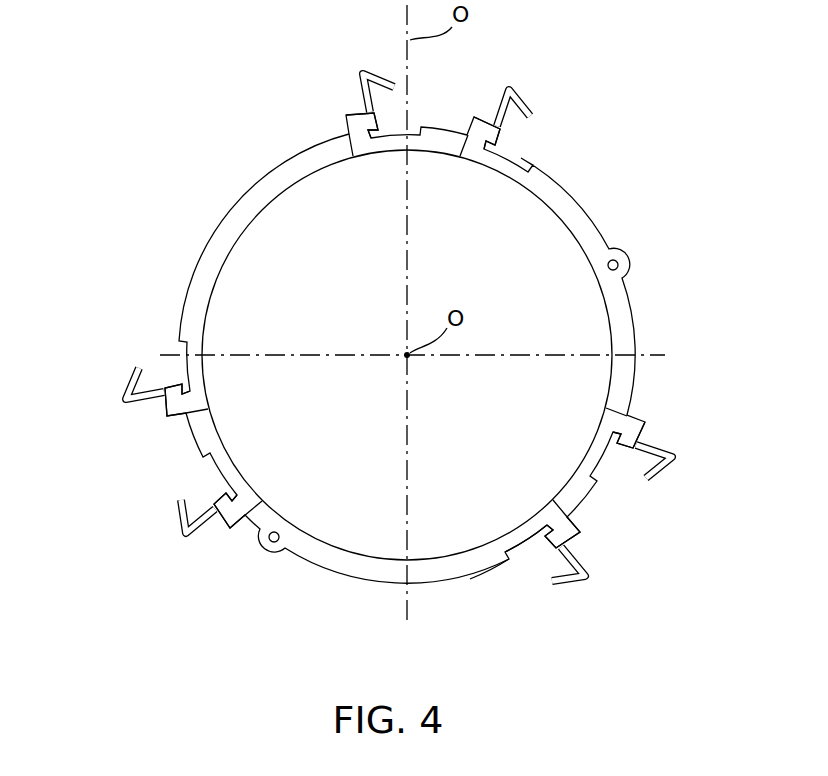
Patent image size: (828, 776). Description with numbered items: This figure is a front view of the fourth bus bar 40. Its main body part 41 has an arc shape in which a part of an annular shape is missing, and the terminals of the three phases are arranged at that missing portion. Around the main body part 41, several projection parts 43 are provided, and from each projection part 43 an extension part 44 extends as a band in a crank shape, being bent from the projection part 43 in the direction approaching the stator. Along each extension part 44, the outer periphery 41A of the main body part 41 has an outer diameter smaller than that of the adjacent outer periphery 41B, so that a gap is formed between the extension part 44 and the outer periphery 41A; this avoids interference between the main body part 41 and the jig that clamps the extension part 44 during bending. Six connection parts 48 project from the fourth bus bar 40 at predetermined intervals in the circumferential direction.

The fourth bus bar 40 is at (637, 245).
The main body part 41 is at (569, 232).
The outer periphery 41A is at (523, 548).
The outer periphery 41B is at (495, 572).
The projection part 43 is at (350, 134).
The extension part 44 is at (348, 114).
The connection part 48 is at (362, 71).